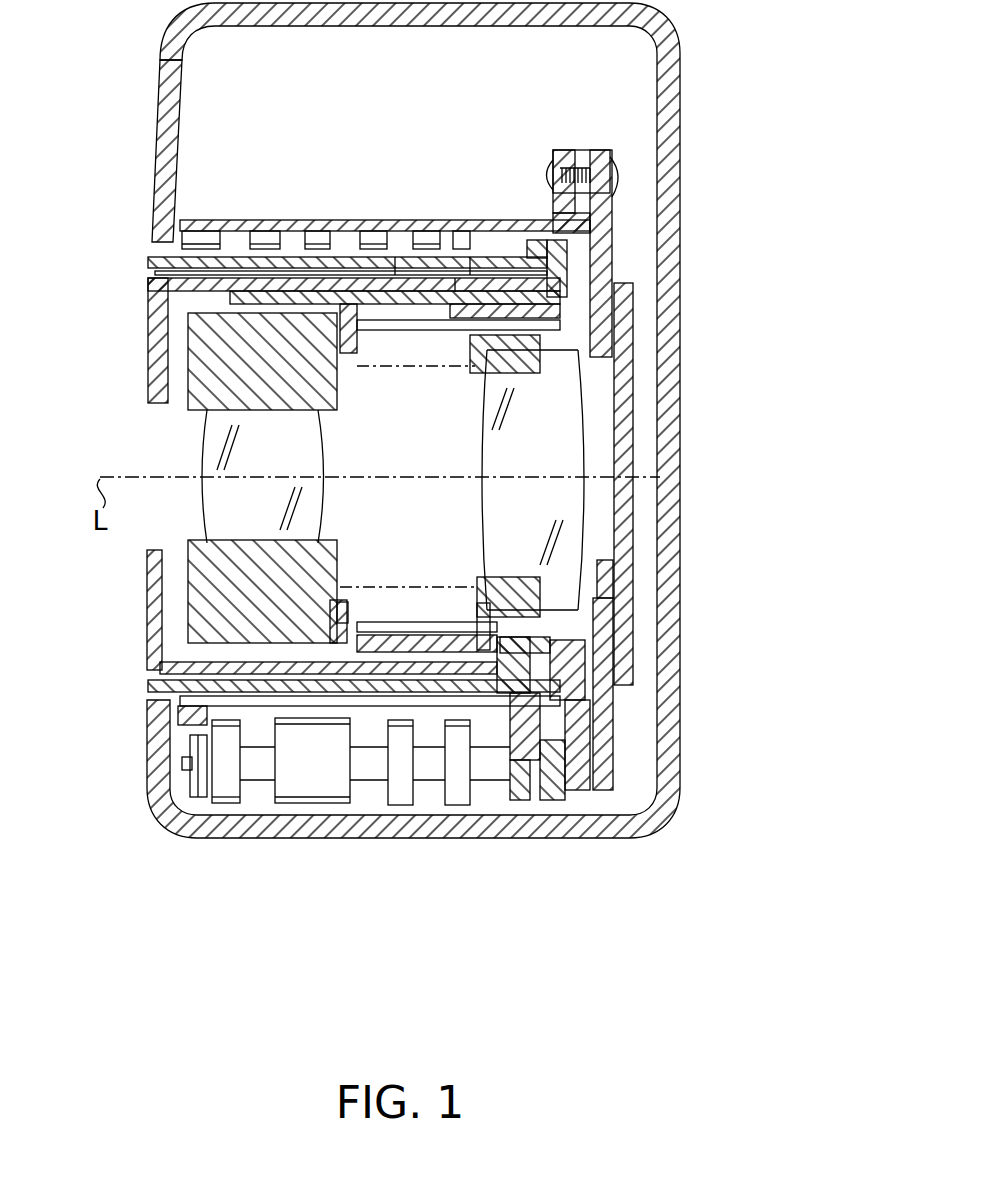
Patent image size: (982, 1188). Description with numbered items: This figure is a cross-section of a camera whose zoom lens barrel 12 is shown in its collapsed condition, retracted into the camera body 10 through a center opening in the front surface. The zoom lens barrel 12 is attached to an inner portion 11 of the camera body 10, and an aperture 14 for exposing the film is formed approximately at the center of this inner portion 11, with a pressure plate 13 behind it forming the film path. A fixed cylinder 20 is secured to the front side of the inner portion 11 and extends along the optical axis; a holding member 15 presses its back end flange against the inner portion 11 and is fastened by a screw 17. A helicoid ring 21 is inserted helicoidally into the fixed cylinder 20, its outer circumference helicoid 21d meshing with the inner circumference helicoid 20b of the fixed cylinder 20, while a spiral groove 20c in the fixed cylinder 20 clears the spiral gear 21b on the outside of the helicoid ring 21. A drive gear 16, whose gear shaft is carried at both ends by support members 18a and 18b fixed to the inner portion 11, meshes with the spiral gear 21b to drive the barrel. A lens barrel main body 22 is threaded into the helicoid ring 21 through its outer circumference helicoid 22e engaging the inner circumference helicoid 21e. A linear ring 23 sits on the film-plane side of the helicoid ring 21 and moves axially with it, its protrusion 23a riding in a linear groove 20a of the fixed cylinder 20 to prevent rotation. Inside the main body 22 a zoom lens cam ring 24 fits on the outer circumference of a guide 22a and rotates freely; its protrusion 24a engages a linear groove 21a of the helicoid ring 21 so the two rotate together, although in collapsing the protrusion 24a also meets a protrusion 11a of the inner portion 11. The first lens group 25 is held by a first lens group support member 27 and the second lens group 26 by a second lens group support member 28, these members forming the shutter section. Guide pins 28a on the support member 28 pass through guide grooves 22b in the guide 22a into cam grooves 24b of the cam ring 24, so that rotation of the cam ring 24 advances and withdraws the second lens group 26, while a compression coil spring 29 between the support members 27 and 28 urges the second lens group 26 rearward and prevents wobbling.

The camera body 10 is at (680, 162).
The inner portion 11 is at (600, 198).
The protrusion 11a is at (597, 718).
The zoom lens barrel 12 is at (188, 182).
The pressure plate 13 is at (627, 408).
The aperture 14 is at (615, 575).
The holding member 15 is at (566, 152).
The drive gear 16 is at (360, 815).
The screw 17 is at (585, 165).
The support member 18a is at (197, 805).
The support member 18b is at (562, 800).
The fixed cylinder 20 is at (180, 224).
The linear groove 20a is at (382, 243).
The inner circumference helicoid 20b is at (317, 243).
The spiral groove 20c is at (262, 232).
The helicoid ring 21 is at (148, 262).
The linear groove 21a is at (148, 690).
The spiral gear 21b is at (615, 795).
The outer circumference helicoid 21d is at (468, 258).
The inner circumference helicoid 21e is at (393, 255).
The lens barrel main body 22 is at (148, 608).
The guide 22a is at (345, 352).
The guide grooves 22b is at (550, 627).
The outer circumference helicoid 22e is at (455, 275).
The linear ring 23 is at (570, 277).
The protrusion 23a is at (583, 262).
The zoom lens cam ring 24 is at (372, 640).
The protrusion 24a is at (540, 800).
The cam grooves 24b is at (475, 665).
The first lens group 25 is at (240, 521).
The second lens group 26 is at (533, 511).
The first lens group support member 27 is at (250, 381).
The second lens group support member 28 is at (545, 374).
The guide pins 28a is at (470, 590).
The compression coil spring 29 is at (408, 372).